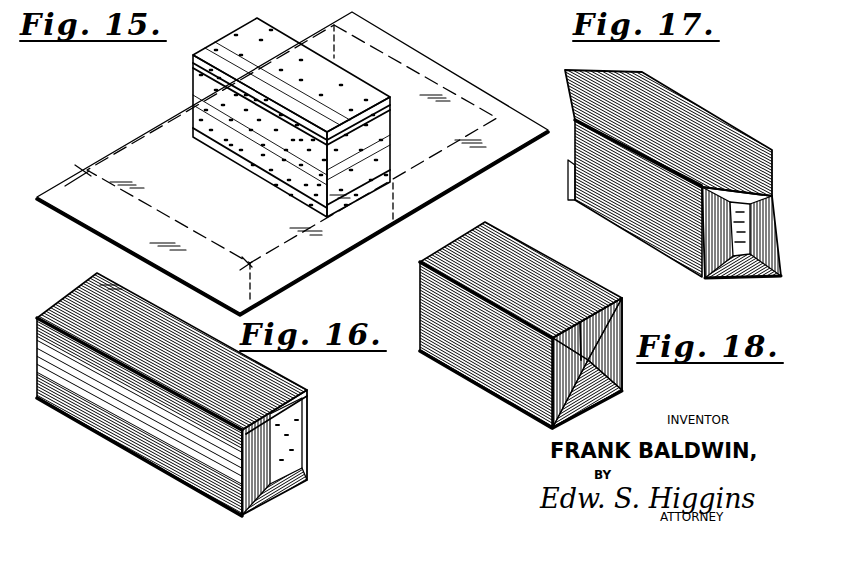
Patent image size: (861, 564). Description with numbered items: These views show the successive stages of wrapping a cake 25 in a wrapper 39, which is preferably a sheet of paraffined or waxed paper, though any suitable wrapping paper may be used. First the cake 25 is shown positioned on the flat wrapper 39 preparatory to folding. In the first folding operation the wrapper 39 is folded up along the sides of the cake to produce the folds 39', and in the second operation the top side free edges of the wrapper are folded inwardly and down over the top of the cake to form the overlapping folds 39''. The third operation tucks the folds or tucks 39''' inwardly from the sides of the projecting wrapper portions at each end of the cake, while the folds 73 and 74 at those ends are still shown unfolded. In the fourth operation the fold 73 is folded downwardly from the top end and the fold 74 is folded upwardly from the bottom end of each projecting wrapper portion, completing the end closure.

In FIG. 15, the cake 25 is at (203, 92).
In FIG. 16, the cake 25 is at (262, 466).
In FIG. 15, the wrapper 39 is at (292, 163).
In FIG. 16, the wrapper 39 is at (139, 417).
In FIG. 17, the wrapper 39 is at (635, 196).
In FIG. 18, the wrapper 39 is at (486, 345).
In FIG. 16, the folds 39' is at (184, 413).
In FIG. 16, the folds 39'' is at (184, 352).
In FIG. 17, the folds 39'' is at (668, 129).
In FIG. 18, the folds 39'' is at (521, 279).
In FIG. 17, the folds or tucks 39''' is at (730, 257).
In FIG. 18, the folds or tucks 39''' is at (590, 370).
In FIG. 18, the fold 73 is at (603, 326).
In FIG. 18, the fold 74 is at (594, 393).